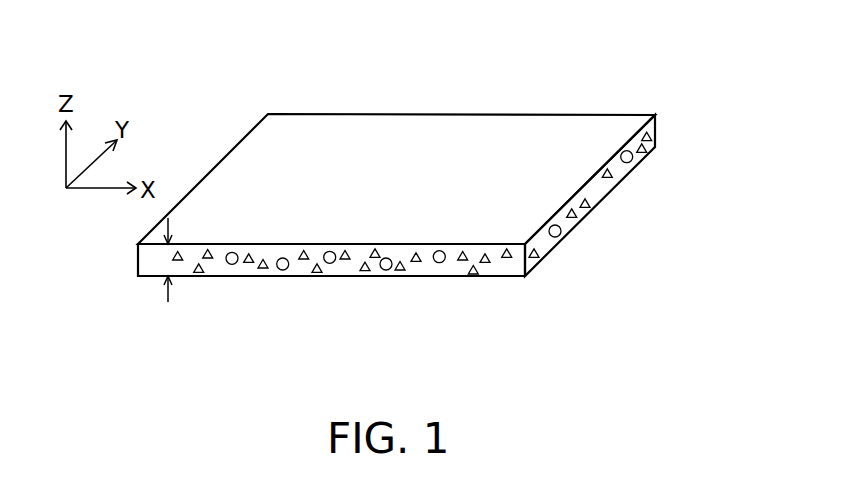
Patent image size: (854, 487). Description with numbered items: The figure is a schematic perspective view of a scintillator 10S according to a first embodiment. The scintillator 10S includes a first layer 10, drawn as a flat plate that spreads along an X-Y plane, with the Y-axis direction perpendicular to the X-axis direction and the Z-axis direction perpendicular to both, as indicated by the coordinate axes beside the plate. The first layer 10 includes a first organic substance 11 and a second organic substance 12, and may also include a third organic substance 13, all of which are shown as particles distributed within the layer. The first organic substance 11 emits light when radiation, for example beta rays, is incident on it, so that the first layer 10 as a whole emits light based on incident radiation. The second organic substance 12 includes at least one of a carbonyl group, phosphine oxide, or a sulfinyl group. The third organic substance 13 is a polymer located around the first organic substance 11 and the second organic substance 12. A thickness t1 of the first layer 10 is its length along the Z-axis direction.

The first layer 10 is at (431, 196).
The scintillator 10S is at (680, 100).
The first organic substance 11 is at (232, 265).
The second organic substance 12 is at (350, 259).
The third organic substance 13 is at (431, 266).
The thickness t1 is at (166, 260).